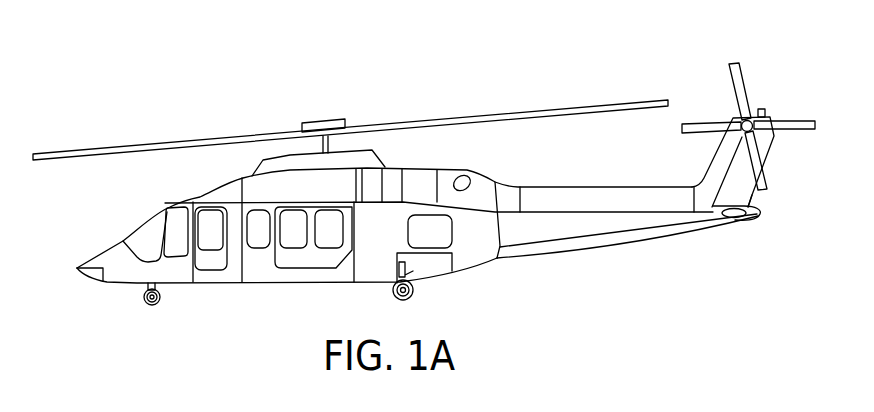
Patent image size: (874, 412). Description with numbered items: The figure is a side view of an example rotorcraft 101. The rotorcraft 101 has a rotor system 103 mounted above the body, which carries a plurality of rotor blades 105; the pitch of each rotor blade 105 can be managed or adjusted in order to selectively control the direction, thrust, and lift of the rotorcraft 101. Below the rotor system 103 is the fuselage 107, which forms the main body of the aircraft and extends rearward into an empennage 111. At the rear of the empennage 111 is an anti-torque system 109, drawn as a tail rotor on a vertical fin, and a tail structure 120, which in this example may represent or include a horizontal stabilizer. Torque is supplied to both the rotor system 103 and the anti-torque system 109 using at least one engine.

The rotorcraft 101 is at (211, 63).
The rotor system 103 is at (339, 100).
The rotor blade 105 is at (165, 142).
The fuselage 107 is at (258, 284).
The anti-torque system 109 is at (773, 92).
The empennage 111 is at (626, 244).
The tail structure 120 is at (735, 220).